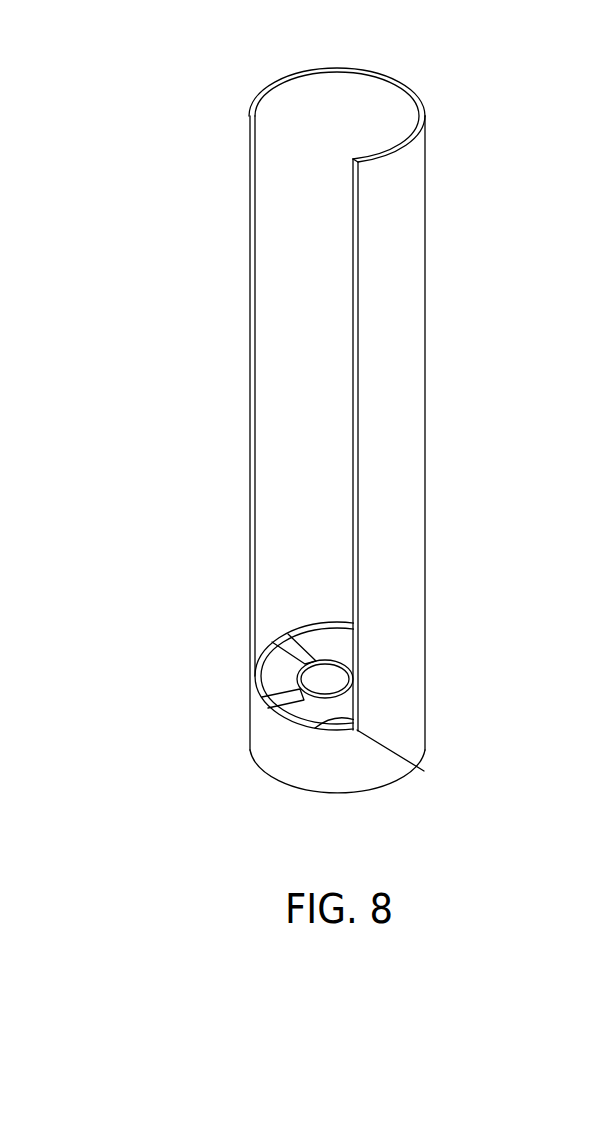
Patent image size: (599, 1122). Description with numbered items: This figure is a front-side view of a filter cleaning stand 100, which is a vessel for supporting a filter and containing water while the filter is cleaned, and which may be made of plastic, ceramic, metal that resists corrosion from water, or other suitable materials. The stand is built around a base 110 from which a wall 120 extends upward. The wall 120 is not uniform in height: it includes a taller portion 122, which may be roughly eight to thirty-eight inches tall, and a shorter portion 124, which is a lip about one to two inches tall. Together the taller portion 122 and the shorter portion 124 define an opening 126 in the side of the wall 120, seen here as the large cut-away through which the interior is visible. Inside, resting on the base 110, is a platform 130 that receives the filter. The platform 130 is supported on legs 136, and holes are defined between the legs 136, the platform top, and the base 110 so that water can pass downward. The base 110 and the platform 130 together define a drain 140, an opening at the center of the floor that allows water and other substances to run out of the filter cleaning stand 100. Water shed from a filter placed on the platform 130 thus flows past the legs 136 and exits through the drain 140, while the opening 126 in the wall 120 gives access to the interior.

The filter cleaning stand 100 is at (150, 39).
The base 110 is at (275, 755).
The wall 120 is at (248, 158).
The taller portion 122 is at (253, 218).
The shorter portion 124 is at (428, 767).
The opening 126 is at (295, 264).
The platform 130 is at (343, 717).
The legs 136 is at (290, 693).
The drain 140 is at (322, 672).